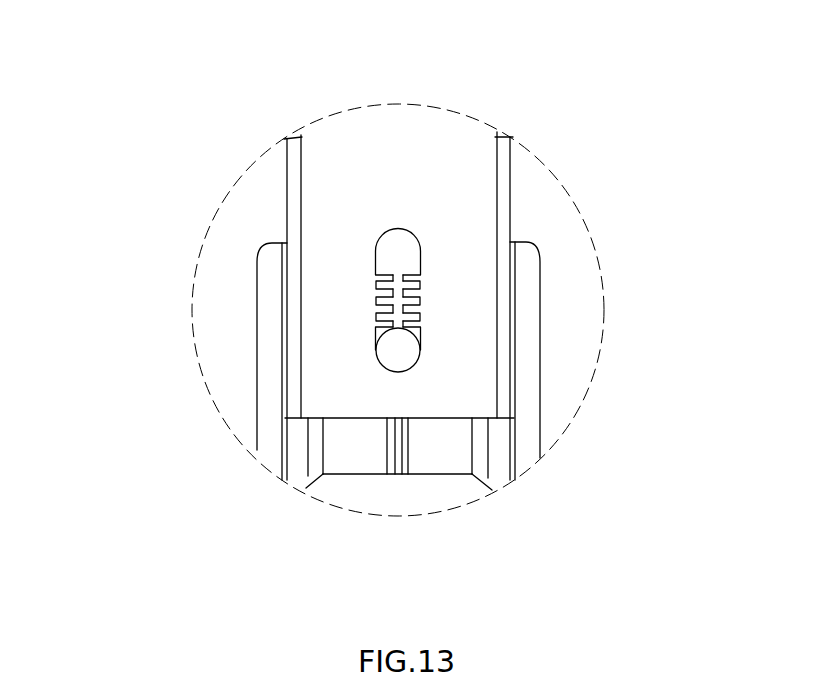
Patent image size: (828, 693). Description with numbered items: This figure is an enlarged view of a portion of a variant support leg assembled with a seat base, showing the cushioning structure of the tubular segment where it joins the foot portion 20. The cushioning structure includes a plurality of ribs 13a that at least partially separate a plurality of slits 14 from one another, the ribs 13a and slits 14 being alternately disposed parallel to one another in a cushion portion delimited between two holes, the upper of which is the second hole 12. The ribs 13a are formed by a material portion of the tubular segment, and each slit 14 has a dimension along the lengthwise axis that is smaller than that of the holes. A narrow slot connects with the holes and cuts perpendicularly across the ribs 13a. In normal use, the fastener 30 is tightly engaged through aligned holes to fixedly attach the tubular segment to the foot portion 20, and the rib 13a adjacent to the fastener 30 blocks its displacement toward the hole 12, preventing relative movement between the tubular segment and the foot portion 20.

The second hole 12 is at (413, 252).
The ribs 13a is at (420, 322).
The slits 14 is at (378, 311).
The foot portion 20 is at (528, 414).
The fastener 30 is at (398, 346).